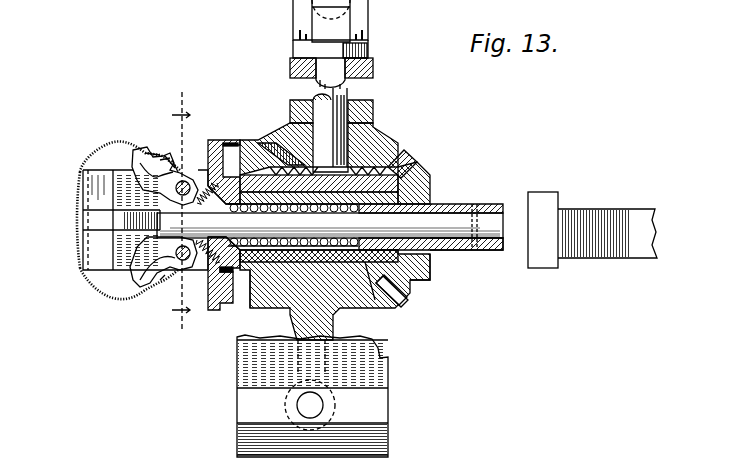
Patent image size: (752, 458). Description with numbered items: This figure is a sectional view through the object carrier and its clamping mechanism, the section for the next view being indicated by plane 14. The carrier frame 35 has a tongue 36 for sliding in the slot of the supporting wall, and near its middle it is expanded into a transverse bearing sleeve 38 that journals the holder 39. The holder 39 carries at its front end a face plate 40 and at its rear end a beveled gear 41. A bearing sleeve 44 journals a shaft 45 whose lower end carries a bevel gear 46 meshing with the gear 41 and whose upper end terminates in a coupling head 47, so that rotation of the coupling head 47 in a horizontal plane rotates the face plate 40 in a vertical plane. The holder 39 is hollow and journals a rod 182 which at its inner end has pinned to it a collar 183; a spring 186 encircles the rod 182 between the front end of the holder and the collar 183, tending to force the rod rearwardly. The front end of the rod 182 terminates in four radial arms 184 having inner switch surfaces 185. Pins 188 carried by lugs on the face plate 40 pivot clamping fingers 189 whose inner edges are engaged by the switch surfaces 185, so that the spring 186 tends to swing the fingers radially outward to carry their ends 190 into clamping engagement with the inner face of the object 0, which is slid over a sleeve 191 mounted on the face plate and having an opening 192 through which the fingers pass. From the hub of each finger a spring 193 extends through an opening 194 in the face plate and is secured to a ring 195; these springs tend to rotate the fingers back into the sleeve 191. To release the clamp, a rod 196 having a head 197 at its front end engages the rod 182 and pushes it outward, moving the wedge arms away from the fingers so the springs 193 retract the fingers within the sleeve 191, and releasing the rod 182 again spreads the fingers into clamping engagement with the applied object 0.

The section plane 14— 14 is at (183, 212).
The carrier frame 35 is at (388, 387).
The tongue 36 is at (385, 410).
The transverse bearing sleeve 38 is at (405, 288).
The holder 39 is at (414, 176).
The face plate 40 is at (216, 300).
The beveled gear 41 is at (397, 296).
The bearing sleeve 44 is at (375, 113).
The shaft 45 is at (348, 100).
The bevel gear 46 is at (382, 138).
The coupling head 47 is at (368, 18).
The rod 182 is at (446, 222).
The collar 183 is at (445, 250).
The radial arms 184 is at (123, 223).
The switch surfaces 185 is at (122, 257).
The spring 186 is at (380, 302).
The pins 188 is at (150, 178).
The clamping fingers 189 is at (164, 217).
The finger ends 190 is at (163, 282).
The sleeve 191 is at (198, 168).
The opening 192 is at (170, 157).
The spring 193 is at (213, 160).
The opening 194 is at (216, 181).
The ring 195 is at (262, 278).
The rod 196 is at (612, 212).
The head 197 is at (546, 202).
The object 0 is at (80, 240).